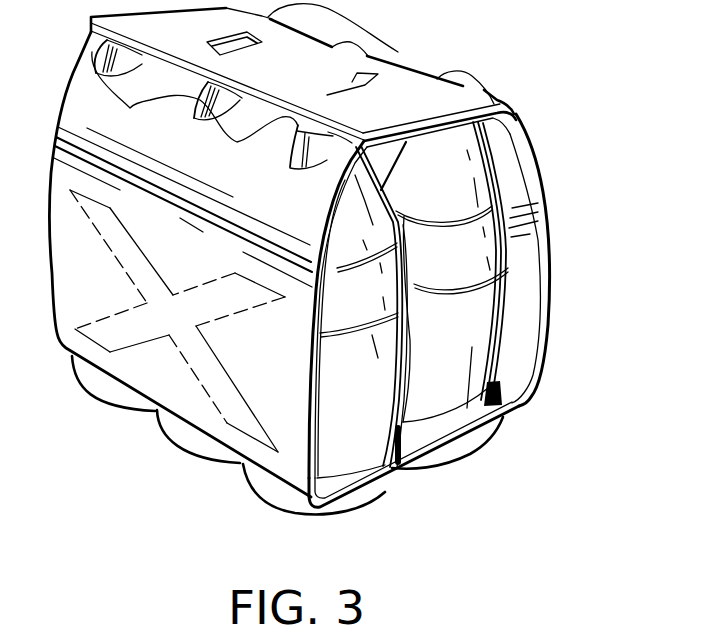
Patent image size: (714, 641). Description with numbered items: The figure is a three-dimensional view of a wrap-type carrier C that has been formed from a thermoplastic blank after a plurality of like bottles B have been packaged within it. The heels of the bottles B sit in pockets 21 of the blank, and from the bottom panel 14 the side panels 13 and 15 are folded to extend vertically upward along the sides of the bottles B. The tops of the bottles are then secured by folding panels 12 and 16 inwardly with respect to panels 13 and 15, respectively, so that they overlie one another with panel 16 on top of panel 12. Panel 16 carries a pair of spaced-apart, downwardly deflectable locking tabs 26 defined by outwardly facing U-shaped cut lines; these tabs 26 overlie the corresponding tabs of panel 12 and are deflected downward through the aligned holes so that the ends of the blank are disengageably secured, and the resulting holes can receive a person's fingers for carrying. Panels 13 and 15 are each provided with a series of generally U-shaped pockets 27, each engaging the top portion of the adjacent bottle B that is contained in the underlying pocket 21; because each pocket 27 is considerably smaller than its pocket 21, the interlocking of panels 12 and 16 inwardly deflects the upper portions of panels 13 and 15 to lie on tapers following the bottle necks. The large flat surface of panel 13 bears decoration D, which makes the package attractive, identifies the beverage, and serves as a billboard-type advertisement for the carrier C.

The panel 12 is at (346, 79).
The panel 13 is at (306, 443).
The panel 14 is at (404, 472).
The panel 15 is at (546, 264).
The panel 16 is at (496, 112).
The pocket 21 is at (360, 502).
The locking tab 26 is at (208, 43).
The pocket 27 is at (439, 76).
The bottle B is at (508, 380).
The carrier C is at (413, 302).
The decoration D is at (165, 378).